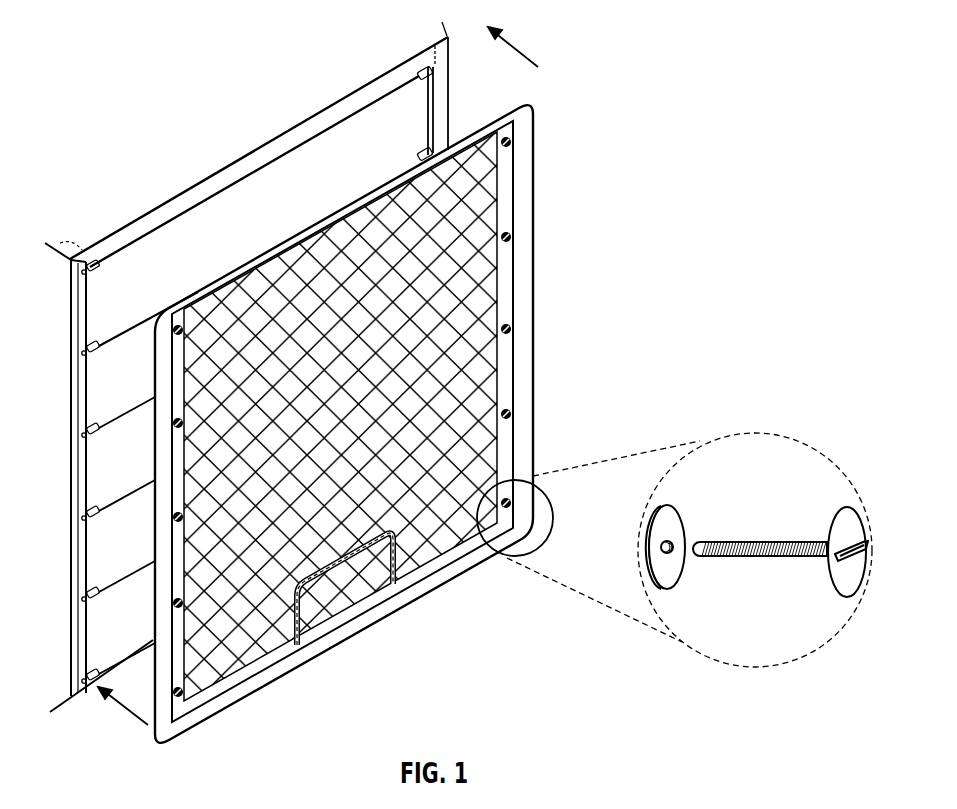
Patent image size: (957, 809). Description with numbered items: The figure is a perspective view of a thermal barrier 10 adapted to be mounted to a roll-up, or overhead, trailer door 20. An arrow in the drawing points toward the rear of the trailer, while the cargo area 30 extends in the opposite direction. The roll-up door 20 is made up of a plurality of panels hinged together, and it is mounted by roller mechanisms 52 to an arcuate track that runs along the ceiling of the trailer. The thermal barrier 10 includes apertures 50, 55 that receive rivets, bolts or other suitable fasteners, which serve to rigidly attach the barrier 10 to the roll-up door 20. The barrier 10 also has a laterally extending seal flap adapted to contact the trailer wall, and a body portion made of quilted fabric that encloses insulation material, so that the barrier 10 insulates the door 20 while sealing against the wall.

The thermal barrier 10 is at (447, 540).
The roll-up trailer door 20 is at (107, 552).
The cargo area 30 is at (231, 68).
The apertures 50 is at (512, 237).
The roller mechanisms 52 is at (436, 65).
The aperture 55 is at (507, 490).